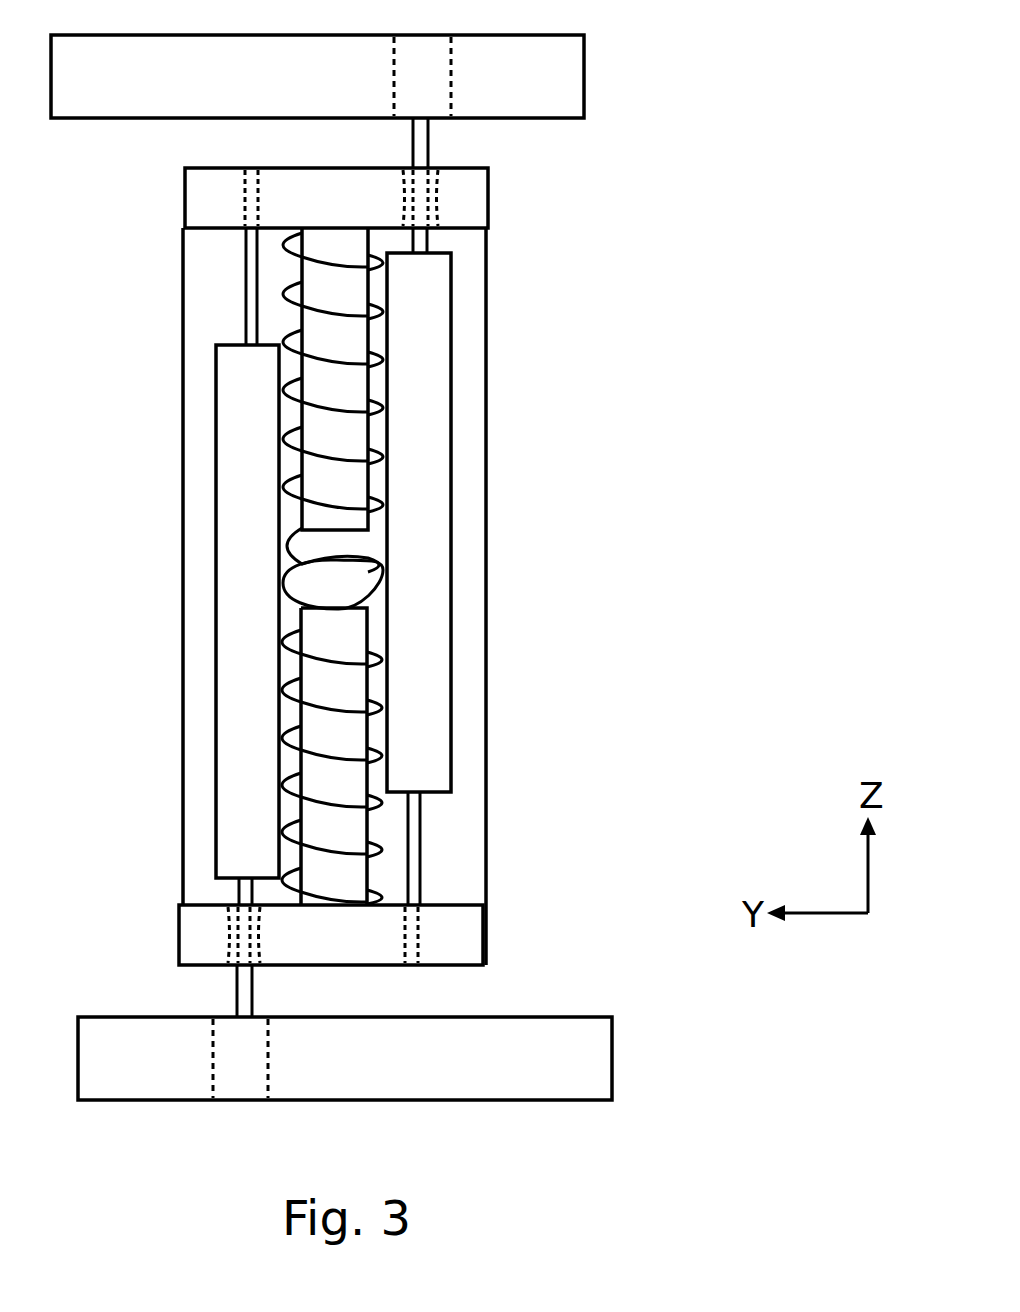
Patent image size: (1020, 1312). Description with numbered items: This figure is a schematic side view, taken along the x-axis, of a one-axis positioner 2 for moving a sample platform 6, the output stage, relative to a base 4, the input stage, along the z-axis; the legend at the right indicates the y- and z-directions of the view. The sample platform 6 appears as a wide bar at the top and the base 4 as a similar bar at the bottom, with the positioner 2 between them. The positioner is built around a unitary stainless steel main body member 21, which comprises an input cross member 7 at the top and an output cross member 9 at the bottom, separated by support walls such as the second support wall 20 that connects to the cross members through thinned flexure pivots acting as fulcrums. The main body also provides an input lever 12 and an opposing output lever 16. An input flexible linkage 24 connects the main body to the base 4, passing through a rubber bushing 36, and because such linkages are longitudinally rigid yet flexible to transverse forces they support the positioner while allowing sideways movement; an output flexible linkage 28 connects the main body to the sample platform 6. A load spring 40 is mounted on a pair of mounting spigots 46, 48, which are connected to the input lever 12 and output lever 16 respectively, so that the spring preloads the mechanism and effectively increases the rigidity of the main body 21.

The positioner 2 is at (606, 270).
The base 4 is at (612, 1058).
The sample platform 6 is at (584, 77).
The input cross member 7 is at (346, 215).
The output cross member 9 is at (339, 956).
The input lever 12 is at (185, 198).
The output lever 16 is at (178, 925).
The second support wall 20 is at (486, 410).
The main body member 21 is at (470, 940).
The input flexible linkage 24 is at (252, 710).
The output flexible linkage 28 is at (440, 587).
The rubber bushing 36 is at (228, 940).
The load spring 40 is at (290, 235).
The mounting spigot 46 is at (285, 313).
The mounting spigot 48 is at (307, 760).